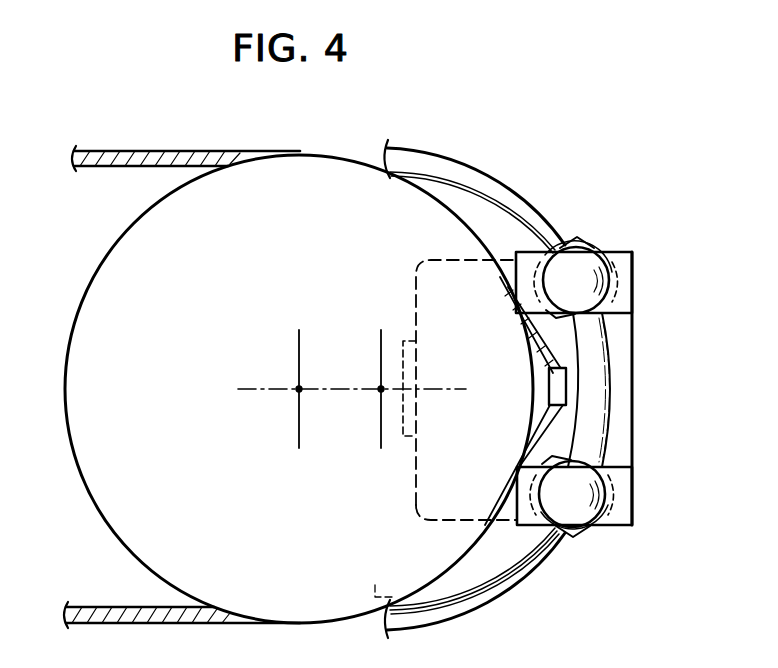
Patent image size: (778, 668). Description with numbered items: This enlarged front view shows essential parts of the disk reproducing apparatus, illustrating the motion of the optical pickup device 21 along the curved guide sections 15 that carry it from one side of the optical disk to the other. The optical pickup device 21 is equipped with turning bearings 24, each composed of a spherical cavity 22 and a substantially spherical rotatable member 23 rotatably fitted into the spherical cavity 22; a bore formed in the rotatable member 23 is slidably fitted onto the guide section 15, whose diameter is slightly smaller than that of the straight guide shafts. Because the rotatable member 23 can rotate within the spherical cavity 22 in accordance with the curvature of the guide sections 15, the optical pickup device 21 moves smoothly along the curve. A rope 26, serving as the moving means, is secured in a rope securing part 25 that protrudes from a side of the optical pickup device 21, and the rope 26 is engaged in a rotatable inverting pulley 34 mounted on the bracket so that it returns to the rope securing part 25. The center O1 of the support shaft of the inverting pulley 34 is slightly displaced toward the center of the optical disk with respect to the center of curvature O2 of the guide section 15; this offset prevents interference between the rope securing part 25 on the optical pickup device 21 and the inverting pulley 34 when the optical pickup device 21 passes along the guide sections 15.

The guide section 15 is at (495, 189).
The optical pickup device 21 is at (634, 347).
The spherical cavity 22 is at (613, 284).
The rotatable member 23 is at (578, 238).
The turning bearing 24 is at (633, 247).
The rope securing part 25 is at (548, 378).
The rope 26 is at (146, 151).
The inverting pulley 34 is at (100, 484).
The center of support shaft of inverting pulley O1 is at (297, 392).
The center of curvature of guide section O2 is at (380, 386).